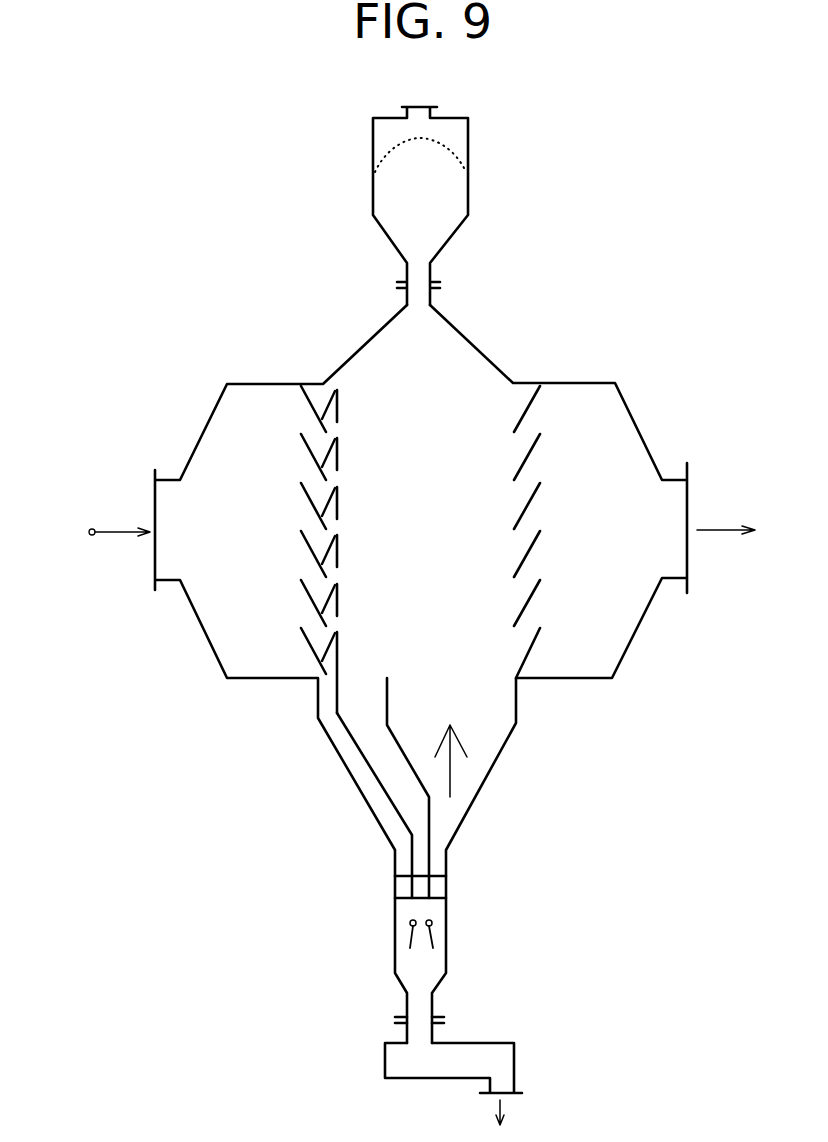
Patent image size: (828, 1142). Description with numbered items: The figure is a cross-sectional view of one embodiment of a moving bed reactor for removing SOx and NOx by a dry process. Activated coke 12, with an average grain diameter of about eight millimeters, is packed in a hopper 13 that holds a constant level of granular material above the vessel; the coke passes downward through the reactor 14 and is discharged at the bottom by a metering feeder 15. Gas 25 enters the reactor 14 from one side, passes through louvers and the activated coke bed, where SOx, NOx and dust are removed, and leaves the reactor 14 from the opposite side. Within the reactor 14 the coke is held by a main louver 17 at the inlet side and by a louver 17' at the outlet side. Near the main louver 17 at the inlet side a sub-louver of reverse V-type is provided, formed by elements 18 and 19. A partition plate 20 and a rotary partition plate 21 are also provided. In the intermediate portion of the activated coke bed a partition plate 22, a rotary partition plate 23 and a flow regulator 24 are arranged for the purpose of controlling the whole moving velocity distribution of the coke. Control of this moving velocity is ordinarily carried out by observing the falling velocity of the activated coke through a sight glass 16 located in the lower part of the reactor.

The activated coke 12 is at (392, 190).
The hopper 13 is at (470, 180).
The reactor 14 is at (581, 383).
The metering feeder 15 is at (477, 1043).
The sight glass 16 is at (445, 885).
The main louver 17 is at (277, 530).
The louver 17' is at (557, 532).
The sub-louver of reverse V-type 18 is at (330, 484).
The sub-louver of reverse V-type 19 is at (335, 507).
The partition plate 20 is at (353, 752).
The rotary partition plate 21 is at (410, 938).
The partition plate 22 is at (390, 690).
The rotary partition plate 23 is at (432, 937).
The flow regulator 24 is at (450, 760).
The gas 25 is at (119, 517).